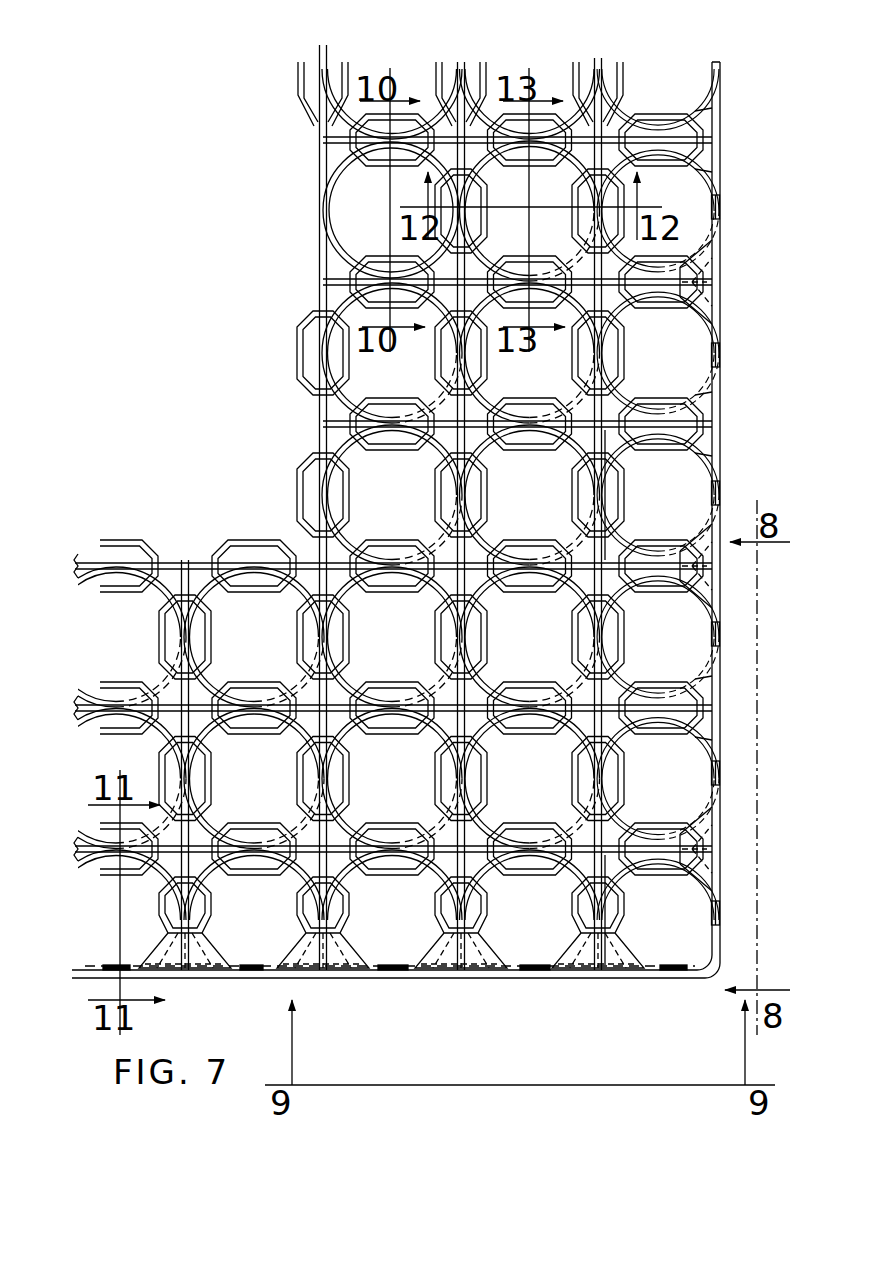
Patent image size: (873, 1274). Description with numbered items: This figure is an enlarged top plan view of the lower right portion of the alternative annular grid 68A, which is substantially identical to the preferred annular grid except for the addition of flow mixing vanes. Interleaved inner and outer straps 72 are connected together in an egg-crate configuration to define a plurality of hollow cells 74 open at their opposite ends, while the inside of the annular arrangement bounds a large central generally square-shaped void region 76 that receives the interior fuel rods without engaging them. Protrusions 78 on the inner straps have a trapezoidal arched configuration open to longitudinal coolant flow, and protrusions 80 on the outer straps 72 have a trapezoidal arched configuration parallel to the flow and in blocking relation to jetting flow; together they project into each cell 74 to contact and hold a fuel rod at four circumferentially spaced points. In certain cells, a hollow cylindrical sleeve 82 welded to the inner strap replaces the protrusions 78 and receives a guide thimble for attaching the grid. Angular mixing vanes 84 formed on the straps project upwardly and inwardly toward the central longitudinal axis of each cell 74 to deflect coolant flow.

The annular grid 68A is at (732, 100).
The outer straps 72 is at (722, 464).
The hollow cells 74 is at (669, 362).
The central generally square-shaped void region 76 is at (213, 394).
The protrusions 78 is at (527, 540).
The protrusions 80 is at (712, 638).
The hollow cylindrical sleeves 82 is at (340, 262).
The mixing vanes 84 is at (297, 572).